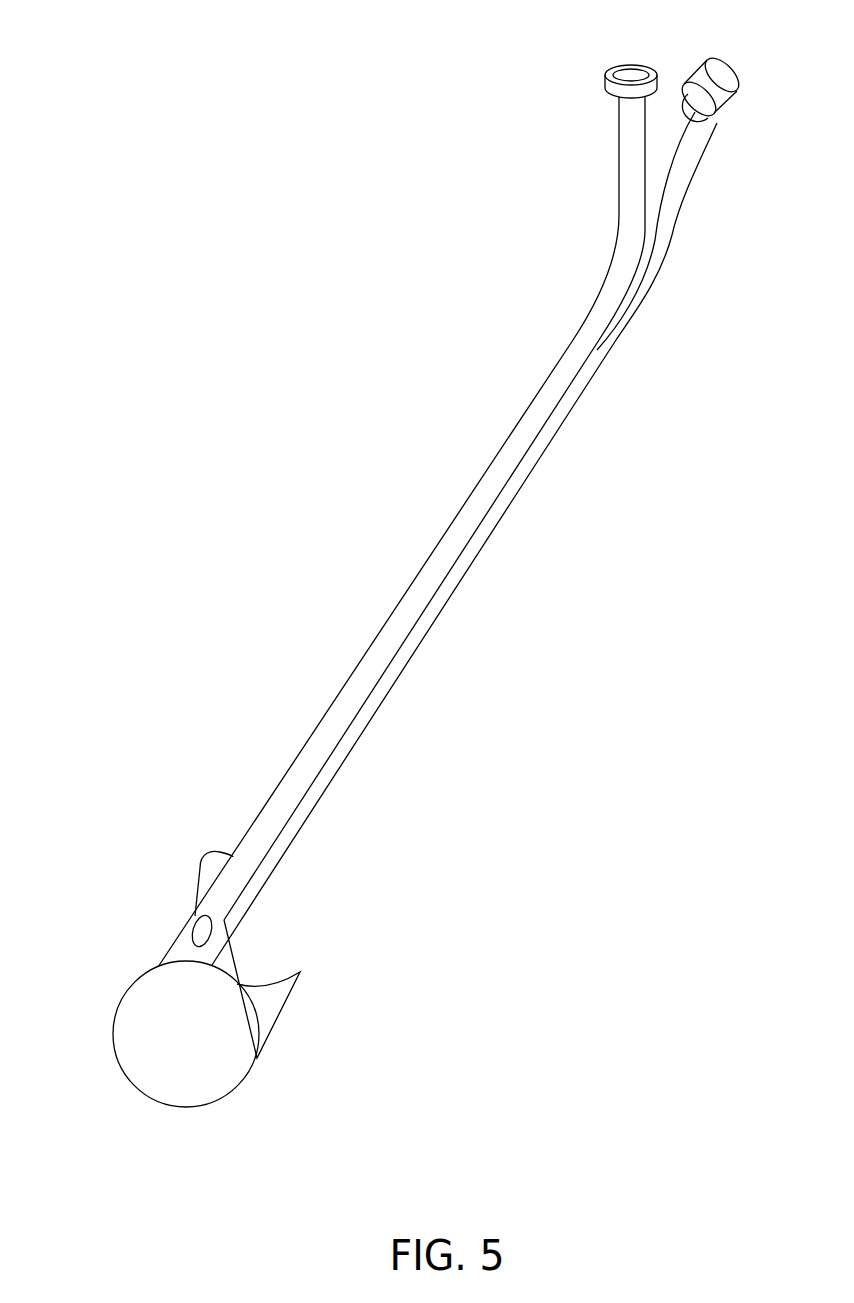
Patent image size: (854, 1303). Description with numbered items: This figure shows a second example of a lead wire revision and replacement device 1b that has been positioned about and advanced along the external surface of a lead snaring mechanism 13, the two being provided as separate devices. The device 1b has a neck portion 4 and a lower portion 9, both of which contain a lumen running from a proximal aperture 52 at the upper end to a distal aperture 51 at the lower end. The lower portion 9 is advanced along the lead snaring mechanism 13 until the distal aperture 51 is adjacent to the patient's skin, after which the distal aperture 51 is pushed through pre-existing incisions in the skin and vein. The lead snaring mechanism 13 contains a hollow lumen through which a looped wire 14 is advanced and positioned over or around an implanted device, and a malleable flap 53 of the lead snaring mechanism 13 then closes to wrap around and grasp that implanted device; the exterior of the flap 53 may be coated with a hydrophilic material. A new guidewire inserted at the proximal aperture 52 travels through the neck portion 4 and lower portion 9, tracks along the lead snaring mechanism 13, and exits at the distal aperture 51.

The lead wire revision and replacement device 1b is at (424, 426).
The proximal aperture 52 is at (635, 65).
The neck portion 4 is at (618, 218).
The lower portion 9 is at (428, 583).
The lead snaring mechanism 13 is at (507, 510).
The distal aperture 51 is at (212, 920).
The flap 53 is at (141, 968).
The looped wire 14 is at (249, 1016).